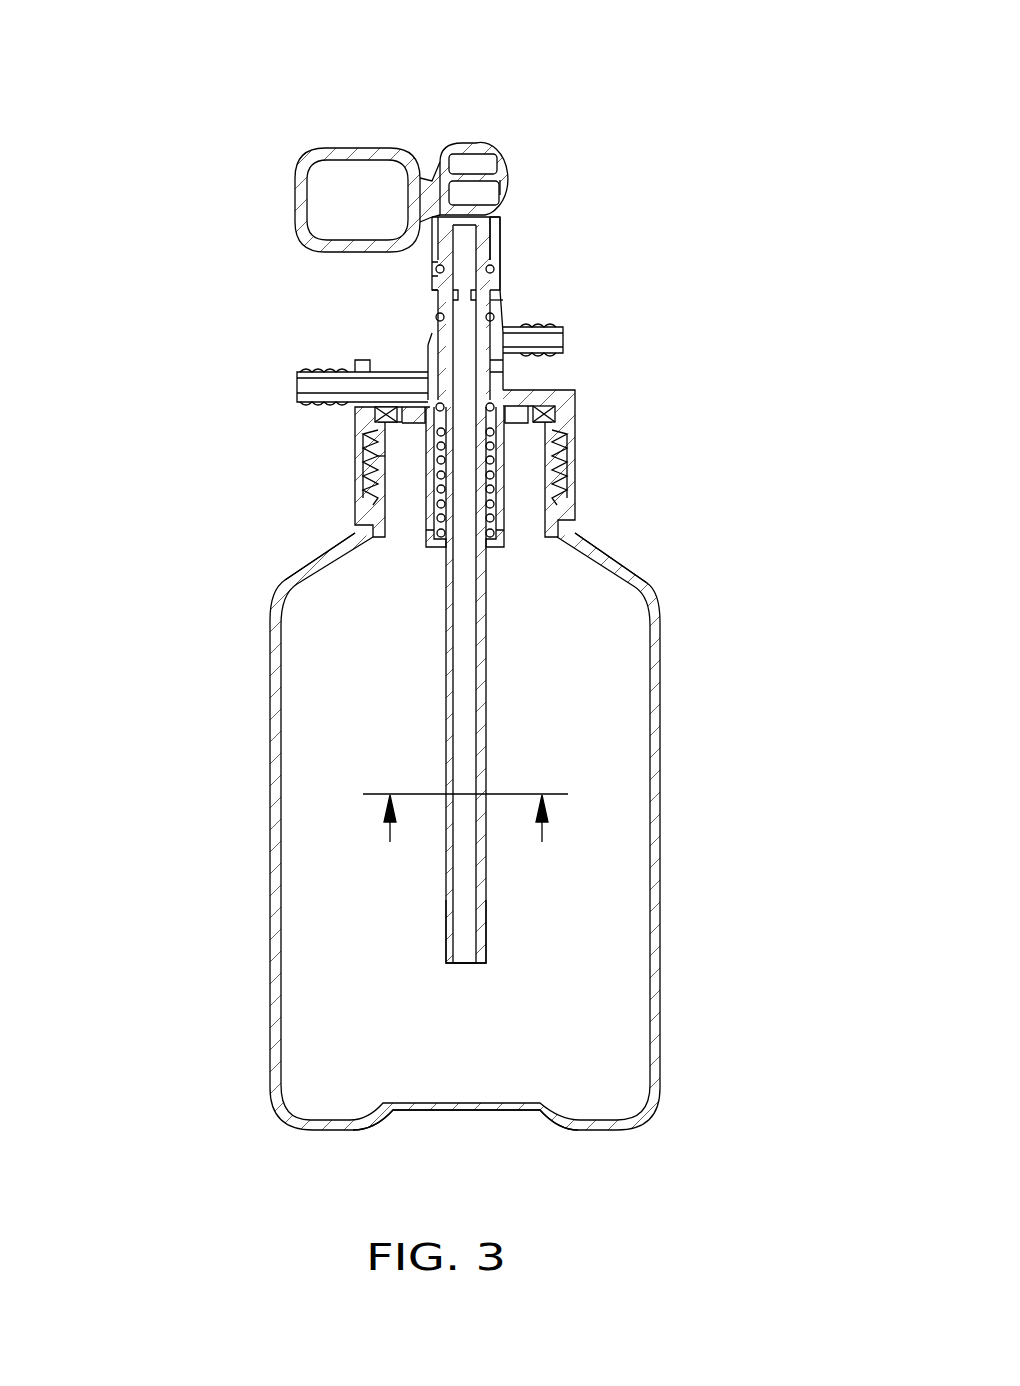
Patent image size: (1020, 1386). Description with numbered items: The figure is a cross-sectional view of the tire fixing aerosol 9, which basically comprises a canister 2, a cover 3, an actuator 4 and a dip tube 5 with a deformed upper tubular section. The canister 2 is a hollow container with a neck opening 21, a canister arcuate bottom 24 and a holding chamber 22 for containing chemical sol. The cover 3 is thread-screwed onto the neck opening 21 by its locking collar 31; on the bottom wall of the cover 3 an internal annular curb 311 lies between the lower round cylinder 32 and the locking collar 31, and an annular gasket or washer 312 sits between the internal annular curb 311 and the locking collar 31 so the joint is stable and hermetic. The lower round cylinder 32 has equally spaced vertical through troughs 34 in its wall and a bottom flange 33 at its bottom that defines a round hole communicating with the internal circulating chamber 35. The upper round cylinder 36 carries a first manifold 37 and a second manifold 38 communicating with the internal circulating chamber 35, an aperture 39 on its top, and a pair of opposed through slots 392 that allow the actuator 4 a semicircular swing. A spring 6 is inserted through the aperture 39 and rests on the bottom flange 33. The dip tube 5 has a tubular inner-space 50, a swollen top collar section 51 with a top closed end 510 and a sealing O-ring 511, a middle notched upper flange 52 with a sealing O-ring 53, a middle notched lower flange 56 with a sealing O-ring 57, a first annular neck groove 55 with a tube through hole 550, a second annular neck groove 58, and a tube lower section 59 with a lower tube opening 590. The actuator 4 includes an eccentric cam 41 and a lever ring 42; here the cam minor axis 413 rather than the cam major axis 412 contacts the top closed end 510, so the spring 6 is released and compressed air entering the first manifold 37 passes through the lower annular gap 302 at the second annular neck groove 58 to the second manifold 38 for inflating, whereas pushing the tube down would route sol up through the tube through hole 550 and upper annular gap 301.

The tire fixing aerosol 9 is at (128, 413).
The canister 2 is at (655, 902).
The neck opening 21 is at (567, 472).
The holding chamber 22 is at (618, 1020).
The canister arcuate bottom 24 is at (447, 1108).
The cover 3 is at (575, 398).
The upper annular gap 301 is at (430, 262).
The lower annular gap 302 is at (505, 368).
The locking collar 31 is at (570, 457).
The internal annular curb 311 is at (572, 448).
The annular gasket or washer 312 is at (375, 412).
The lower round cylinder 32 is at (503, 524).
The bottom flange 33 is at (430, 546).
The vertical through trough 34 is at (435, 470).
The internal circulating chamber 35 is at (375, 465).
The upper round cylinder 36 is at (503, 293).
The first manifold 37 is at (297, 374).
The second manifold 38 is at (560, 328).
The aperture 39 is at (507, 186).
The through slot 392 is at (502, 237).
The actuator 4 is at (474, 150).
The eccentric cam 41 is at (444, 148).
The cam major axis 412 is at (468, 163).
The cam minor axis 413 is at (470, 205).
The lever ring 42 is at (355, 150).
The dip tube 5 is at (452, 714).
The tubular inner-space 50 is at (461, 657).
The swollen top collar section 51 is at (443, 242).
The top closed end 510 is at (498, 210).
The sealing O-ring 511 is at (440, 267).
The middle notched upper flange 52 is at (435, 316).
The sealing O-ring 53 is at (503, 313).
The first annular neck groove 55 is at (437, 297).
The tube through hole 550 is at (500, 260).
The middle notched lower flange 56 is at (548, 396).
The sealing O-ring 57 is at (372, 414).
The second annular neck groove 58 is at (362, 360).
The tube lower section 59 is at (448, 917).
The lower tube opening 590 is at (467, 963).
The spring 6 is at (428, 523).